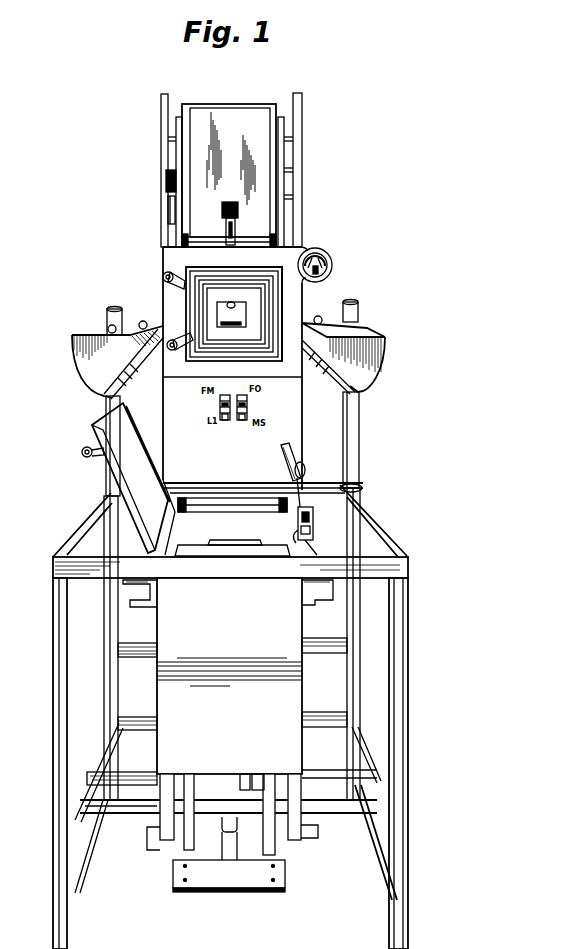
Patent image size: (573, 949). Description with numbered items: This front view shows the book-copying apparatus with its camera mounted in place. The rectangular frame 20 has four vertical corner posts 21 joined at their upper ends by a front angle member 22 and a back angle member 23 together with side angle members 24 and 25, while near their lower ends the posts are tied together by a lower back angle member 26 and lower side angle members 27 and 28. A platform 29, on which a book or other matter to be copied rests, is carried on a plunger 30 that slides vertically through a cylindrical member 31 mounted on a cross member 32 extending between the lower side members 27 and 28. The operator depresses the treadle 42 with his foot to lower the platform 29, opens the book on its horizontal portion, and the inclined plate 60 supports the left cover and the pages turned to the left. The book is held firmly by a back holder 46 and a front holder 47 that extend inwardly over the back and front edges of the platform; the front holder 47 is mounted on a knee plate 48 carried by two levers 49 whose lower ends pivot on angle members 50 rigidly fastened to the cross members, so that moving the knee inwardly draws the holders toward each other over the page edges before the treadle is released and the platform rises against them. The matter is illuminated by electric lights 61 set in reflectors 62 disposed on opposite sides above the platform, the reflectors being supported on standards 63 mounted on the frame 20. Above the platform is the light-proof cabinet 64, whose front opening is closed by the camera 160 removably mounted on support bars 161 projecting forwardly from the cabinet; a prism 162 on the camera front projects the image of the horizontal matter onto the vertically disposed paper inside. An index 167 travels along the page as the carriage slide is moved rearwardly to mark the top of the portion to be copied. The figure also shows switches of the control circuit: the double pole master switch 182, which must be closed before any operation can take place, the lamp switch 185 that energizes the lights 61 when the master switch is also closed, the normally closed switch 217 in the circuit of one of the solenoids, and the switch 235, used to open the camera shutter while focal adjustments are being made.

The rectangular frame 20 is at (50, 706).
The vertical corner posts 21 is at (108, 622).
The front angle member 22 is at (242, 569).
The back angle member 23 is at (314, 487).
The side angle member 24 is at (94, 515).
The side angle member 25 is at (378, 517).
The lower back angle member 26 is at (137, 686).
The lower side angle member 27 is at (78, 867).
The lower side angle member 28 is at (382, 849).
The platform 29 is at (249, 538).
The plunger 30 is at (230, 832).
The vertical cylindrical member 31 is at (96, 797).
The cross member 32 is at (126, 768).
The treadle 42 is at (217, 882).
The back plate or holder 46 is at (228, 500).
The front holder 47 is at (278, 536).
The knee plate 48 is at (285, 750).
The levers 49 is at (163, 820).
The angle members 50 is at (150, 840).
The inclined plate 60 is at (118, 452).
The electric lights 61 is at (137, 369).
The reflectors 62 is at (74, 351).
The standards 63 is at (106, 401).
The cabinet 64 is at (304, 414).
The camera 160 is at (285, 307).
The support bars 161 is at (166, 280).
The prism 162 is at (243, 303).
The index 167 is at (314, 536).
The double pole master switch 182 is at (238, 421).
The lamp switch 185 is at (227, 421).
The normally closed switch 217 is at (220, 404).
The switch 235 is at (247, 405).